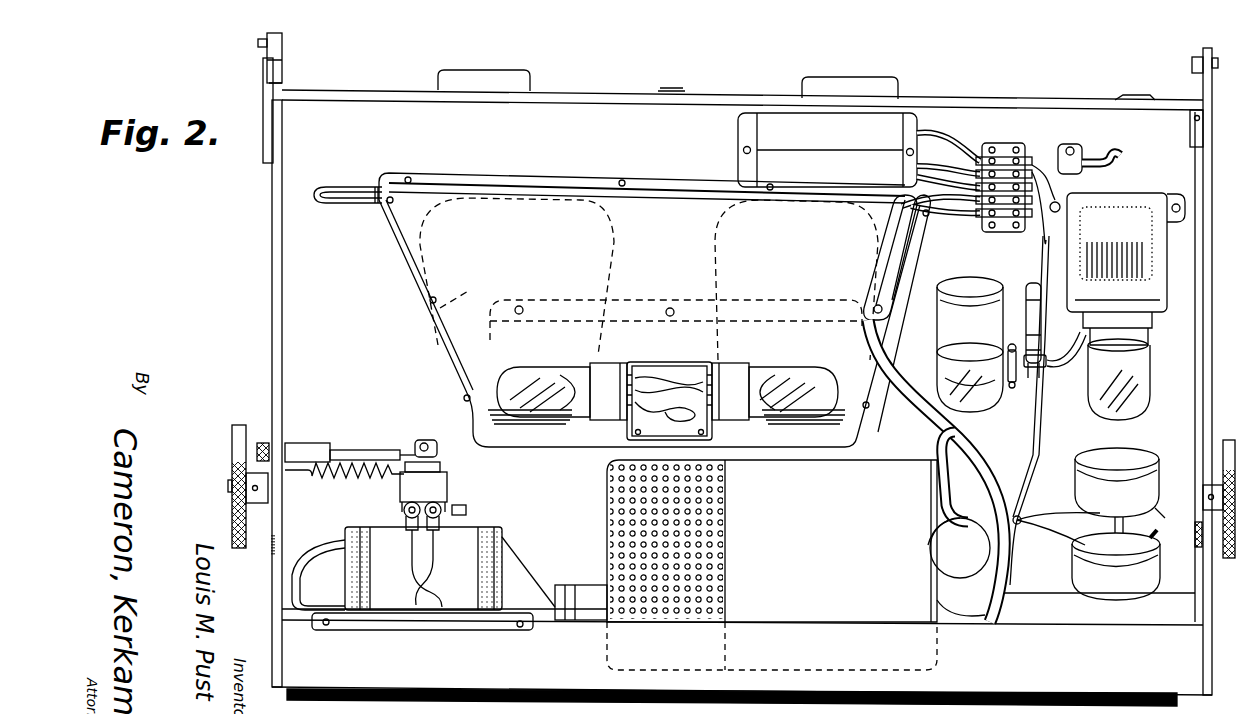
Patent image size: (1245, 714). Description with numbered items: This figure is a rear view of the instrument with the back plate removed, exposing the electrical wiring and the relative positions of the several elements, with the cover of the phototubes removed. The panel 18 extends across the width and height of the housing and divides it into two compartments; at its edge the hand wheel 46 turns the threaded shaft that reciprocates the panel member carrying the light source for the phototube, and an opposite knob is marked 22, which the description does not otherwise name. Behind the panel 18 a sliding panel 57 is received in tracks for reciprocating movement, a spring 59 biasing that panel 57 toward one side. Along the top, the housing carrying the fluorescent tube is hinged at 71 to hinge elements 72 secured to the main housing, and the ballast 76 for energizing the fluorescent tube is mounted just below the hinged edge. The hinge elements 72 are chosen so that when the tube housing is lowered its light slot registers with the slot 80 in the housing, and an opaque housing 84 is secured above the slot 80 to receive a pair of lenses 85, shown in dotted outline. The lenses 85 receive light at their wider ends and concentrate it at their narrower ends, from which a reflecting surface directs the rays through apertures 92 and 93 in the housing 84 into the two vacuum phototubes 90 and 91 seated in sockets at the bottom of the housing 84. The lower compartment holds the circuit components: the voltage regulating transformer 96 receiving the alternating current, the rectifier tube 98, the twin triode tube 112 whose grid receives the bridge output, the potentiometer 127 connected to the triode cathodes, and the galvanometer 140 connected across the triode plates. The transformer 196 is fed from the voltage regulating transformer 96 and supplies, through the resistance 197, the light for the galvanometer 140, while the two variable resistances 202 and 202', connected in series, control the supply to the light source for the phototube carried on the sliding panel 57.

The panel 18 is at (1185, 348).
The knob 22 is at (1228, 558).
The hand wheel 46 is at (233, 454).
The panel 57 is at (902, 345).
The spring 59 is at (930, 380).
The hinge 71 is at (258, 44).
The hinge elements 72 is at (284, 56).
The ballast 76 is at (878, 128).
The slot 80 is at (354, 201).
The opaque housing 84 is at (410, 270).
The lenses 85 is at (440, 308).
The vacuum phototube 90 is at (578, 420).
The vacuum phototube 91 is at (758, 420).
The aperture 92 is at (498, 422).
The aperture 93 is at (830, 424).
The voltage regulating transformer 96 is at (918, 597).
The rectifier tube 98 is at (1140, 388).
The twin triode tube 112 is at (953, 300).
The potentiometer 127 is at (988, 608).
The galvanometer 140 is at (467, 552).
The transformer 196 is at (1135, 215).
The resistance 197 is at (1030, 286).
The variable resistance 202 is at (1131, 481).
The variable resistance 202' is at (1122, 580).